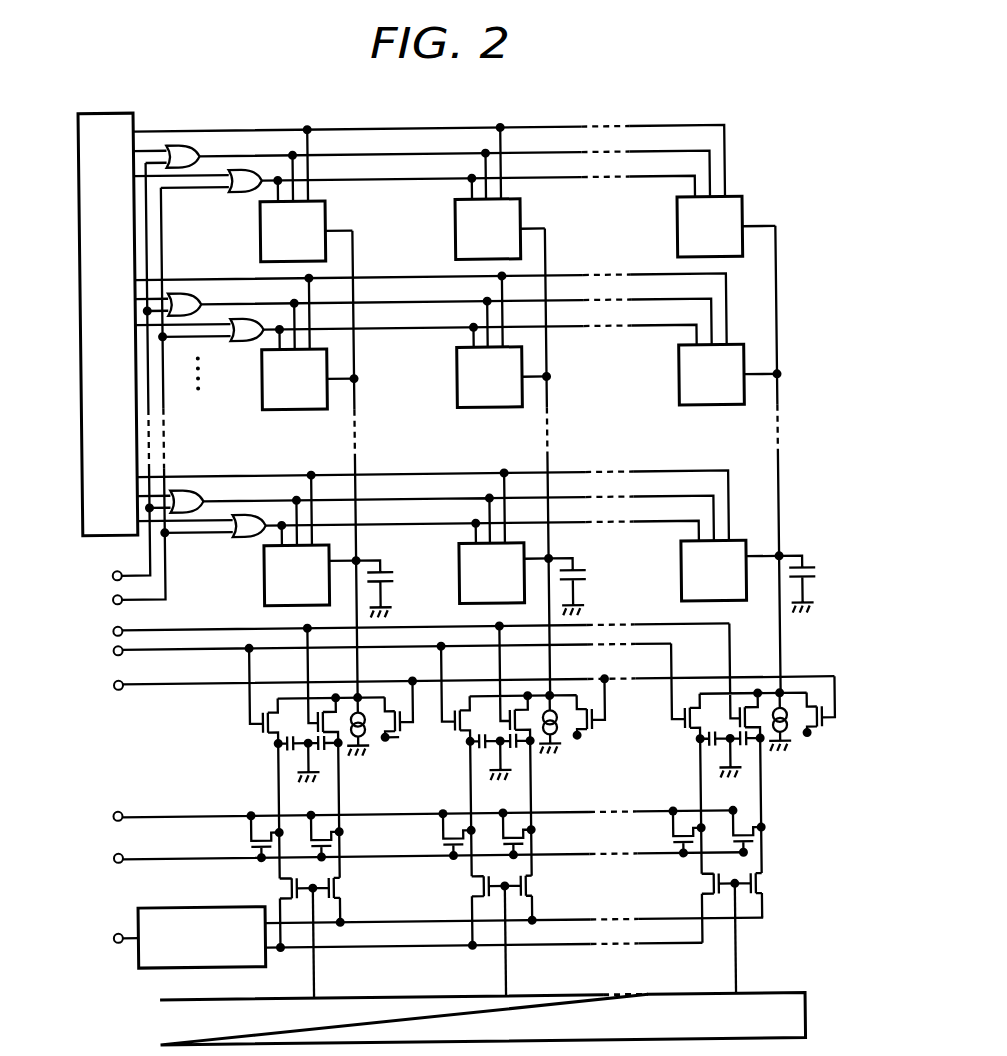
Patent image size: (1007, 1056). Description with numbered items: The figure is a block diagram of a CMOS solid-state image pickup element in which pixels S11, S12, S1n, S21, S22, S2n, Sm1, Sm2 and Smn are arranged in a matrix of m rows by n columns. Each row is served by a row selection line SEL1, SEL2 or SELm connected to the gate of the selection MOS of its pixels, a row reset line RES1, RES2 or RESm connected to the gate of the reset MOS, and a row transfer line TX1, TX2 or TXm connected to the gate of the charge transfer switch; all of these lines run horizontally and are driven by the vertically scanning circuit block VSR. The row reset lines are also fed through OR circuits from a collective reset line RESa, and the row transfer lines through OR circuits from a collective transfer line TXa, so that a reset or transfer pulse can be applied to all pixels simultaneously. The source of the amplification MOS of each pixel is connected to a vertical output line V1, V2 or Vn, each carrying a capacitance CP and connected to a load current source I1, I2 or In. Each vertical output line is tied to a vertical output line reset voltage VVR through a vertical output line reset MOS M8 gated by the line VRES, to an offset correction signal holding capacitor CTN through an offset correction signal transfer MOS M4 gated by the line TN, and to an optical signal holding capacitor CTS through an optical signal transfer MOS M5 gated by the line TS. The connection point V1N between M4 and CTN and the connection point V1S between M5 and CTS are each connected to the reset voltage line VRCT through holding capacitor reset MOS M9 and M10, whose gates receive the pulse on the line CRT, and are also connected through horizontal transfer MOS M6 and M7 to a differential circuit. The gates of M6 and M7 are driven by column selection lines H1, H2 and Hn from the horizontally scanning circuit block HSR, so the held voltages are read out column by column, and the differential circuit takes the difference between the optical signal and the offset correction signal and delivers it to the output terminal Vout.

The vertically scanning circuit block VSR is at (108, 324).
The horizontally scanning circuit block HSR is at (482, 1019).
The row selection line SEL1 is at (140, 128).
The row reset line RES1 is at (163, 148).
The row transfer line TX1 is at (228, 172).
The row selection line SEL2 is at (210, 276).
The row reset line RES2 is at (165, 294).
The row transfer line TX2 is at (212, 321).
The row selection line SELm is at (208, 473).
The row reset line RESm is at (166, 491).
The row transfer line TXm is at (228, 517).
The collective reset line RESa is at (105, 375).
The collective transfer line TXa is at (114, 399).
The pixel S11 is at (306, 231).
The pixel S12 is at (500, 228).
The pixel S1n is at (726, 226).
The pixel S21 is at (310, 379).
The pixel S22 is at (504, 376).
The pixel S2n is at (730, 374).
The pixel Sm1 is at (312, 575).
The pixel Sm2 is at (506, 572).
The pixel Smn is at (732, 570).
The vertical output line V1 is at (360, 556).
The vertical output line V2 is at (552, 554).
The vertical output line Vn is at (782, 548).
The capacitance of vertical output line CP is at (393, 576).
The TS line TS is at (407, 627).
The TN line TN is at (377, 647).
The VRES line VRES is at (446, 681).
The offset correction signal transfer MOS M4 is at (248, 722).
The optical signal transfer MOS M5 is at (318, 710).
The vertical output line reset MOS M8 is at (390, 708).
The vertical output line reset voltage VVR is at (416, 736).
The load current source I1 is at (363, 729).
The load current source I2 is at (555, 729).
The load current source In is at (785, 731).
The offset correction signal holding capacitor CTN is at (282, 748).
The optical signal holding capacitor CTS is at (325, 756).
The connection point V1N is at (272, 741).
The connection point V1S is at (340, 748).
The VRCT line VRCT is at (396, 813).
The CRT line CRT is at (408, 855).
The holding capacitor reset MOS M9 is at (250, 843).
The holding capacitor reset MOS M10 is at (330, 845).
The horizontal transfer MOS M6 is at (284, 890).
The horizontal transfer MOS M7 is at (340, 890).
The column selection line H1 is at (314, 985).
The column selection line H2 is at (505, 982).
The column selection line Hn is at (735, 982).
The output terminal Vout is at (413, 935).